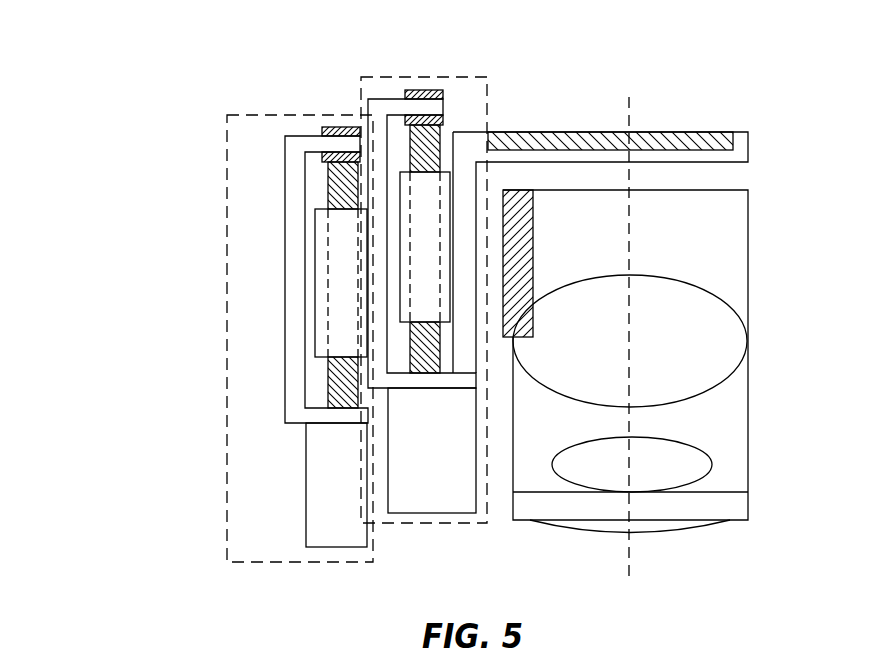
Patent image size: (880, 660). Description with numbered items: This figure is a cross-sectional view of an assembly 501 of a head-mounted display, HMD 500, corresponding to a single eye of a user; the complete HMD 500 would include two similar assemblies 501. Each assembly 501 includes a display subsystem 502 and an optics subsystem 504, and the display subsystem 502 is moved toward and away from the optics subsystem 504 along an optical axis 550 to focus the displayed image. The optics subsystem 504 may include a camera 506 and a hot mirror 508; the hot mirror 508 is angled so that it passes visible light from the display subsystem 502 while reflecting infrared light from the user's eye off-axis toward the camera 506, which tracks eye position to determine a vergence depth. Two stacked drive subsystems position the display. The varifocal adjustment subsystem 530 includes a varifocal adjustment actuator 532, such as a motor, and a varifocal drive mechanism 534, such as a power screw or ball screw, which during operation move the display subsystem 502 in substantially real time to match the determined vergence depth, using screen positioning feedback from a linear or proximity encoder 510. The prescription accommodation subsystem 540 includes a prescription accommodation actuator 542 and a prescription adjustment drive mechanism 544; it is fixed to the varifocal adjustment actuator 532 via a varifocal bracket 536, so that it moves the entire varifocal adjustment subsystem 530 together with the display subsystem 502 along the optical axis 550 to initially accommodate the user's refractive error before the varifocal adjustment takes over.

The HMD 500 is at (200, 96).
The assembly 501 is at (668, 81).
The display subsystem 502 is at (717, 133).
The optics subsystem 504 is at (732, 443).
The camera 506 is at (692, 463).
The hot mirror 508 is at (723, 338).
The linear or proximity encoder 510 is at (518, 190).
The varifocal adjustment subsystem 530 is at (448, 76).
The varifocal adjustment actuator 532 is at (447, 500).
The varifocal drive mechanism 534 is at (403, 198).
The varifocal bracket 536 is at (402, 382).
The prescription accommodation subsystem 540 is at (226, 163).
The prescription accommodation actuator 542 is at (328, 535).
The prescription adjustment drive mechanism 544 is at (323, 303).
The optical axis 550 is at (629, 575).